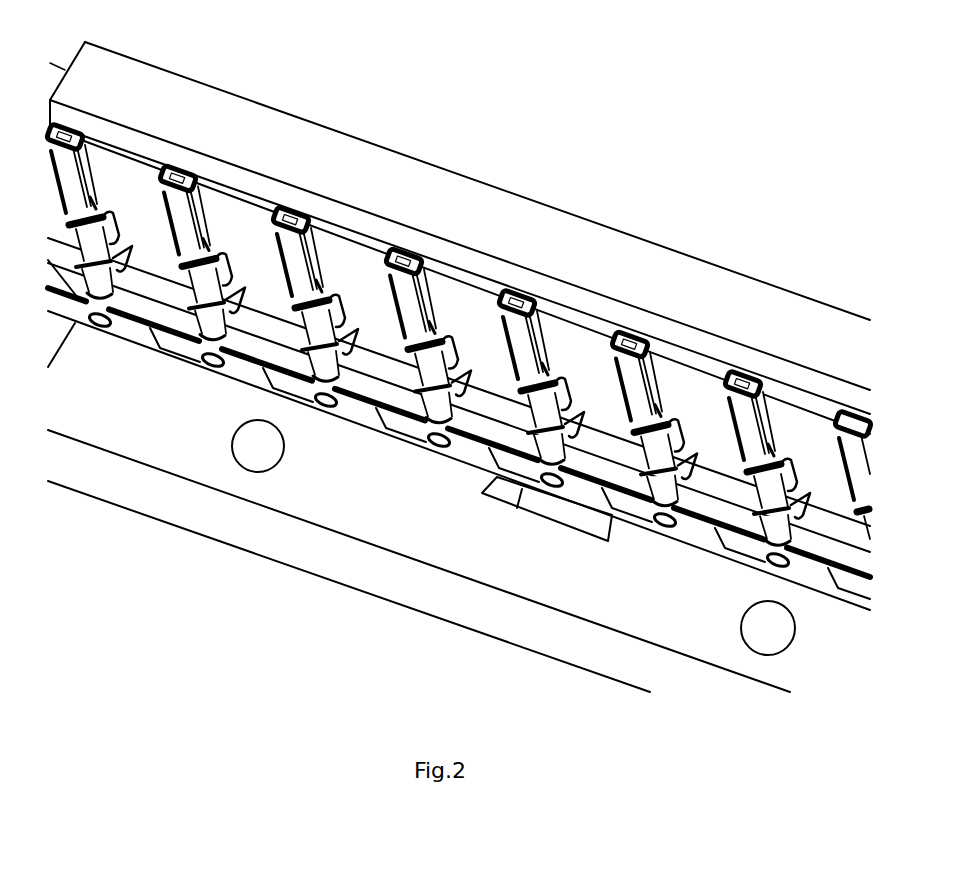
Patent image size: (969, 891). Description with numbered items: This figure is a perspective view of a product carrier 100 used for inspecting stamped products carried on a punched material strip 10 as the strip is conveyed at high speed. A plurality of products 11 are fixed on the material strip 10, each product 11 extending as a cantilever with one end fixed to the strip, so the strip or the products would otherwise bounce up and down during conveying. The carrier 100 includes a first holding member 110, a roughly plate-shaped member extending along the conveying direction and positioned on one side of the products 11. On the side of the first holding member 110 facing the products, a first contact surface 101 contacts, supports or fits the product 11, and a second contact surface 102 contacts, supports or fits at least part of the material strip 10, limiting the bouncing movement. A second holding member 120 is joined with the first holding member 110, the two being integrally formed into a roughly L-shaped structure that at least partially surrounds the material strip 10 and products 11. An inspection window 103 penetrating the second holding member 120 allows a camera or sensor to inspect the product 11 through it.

The carrier 100 is at (507, 158).
The first holding member 110 is at (678, 272).
The first contact surface 101 is at (233, 207).
The second contact surface 102 is at (128, 330).
The material strip 10 is at (238, 367).
The product 11 is at (757, 400).
The inspection window 103 is at (563, 510).
The second holding member 120 is at (302, 543).